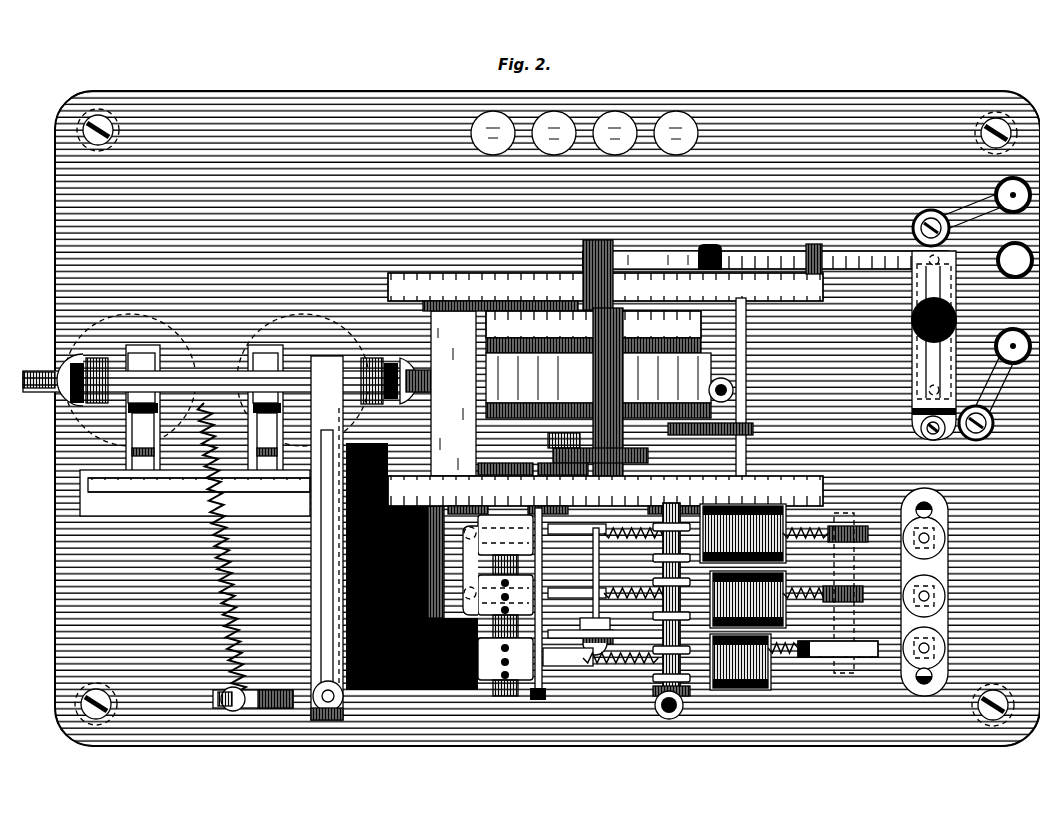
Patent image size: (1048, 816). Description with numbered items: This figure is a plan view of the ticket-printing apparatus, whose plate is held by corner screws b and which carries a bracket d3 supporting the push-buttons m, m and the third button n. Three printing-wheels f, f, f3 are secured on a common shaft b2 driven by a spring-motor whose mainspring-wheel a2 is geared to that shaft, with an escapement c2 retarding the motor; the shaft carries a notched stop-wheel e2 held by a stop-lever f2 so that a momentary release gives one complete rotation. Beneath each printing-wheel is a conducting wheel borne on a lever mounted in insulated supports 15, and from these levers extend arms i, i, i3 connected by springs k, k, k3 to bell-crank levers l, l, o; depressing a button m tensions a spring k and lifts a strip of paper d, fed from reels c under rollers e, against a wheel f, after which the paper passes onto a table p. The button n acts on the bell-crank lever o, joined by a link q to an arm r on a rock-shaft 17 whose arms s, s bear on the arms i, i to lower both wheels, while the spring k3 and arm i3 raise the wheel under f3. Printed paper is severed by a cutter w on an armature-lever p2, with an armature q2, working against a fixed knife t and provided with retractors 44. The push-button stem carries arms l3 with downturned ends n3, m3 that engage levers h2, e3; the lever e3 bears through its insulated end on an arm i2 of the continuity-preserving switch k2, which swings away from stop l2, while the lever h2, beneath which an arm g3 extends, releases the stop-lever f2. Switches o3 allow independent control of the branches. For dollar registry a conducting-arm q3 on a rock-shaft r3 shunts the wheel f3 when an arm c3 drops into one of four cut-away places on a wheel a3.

The fastening screws b is at (92, 106).
The armature-lever p2 is at (160, 340).
The armature q2 is at (195, 493).
The retractors 44 is at (214, 560).
The fixed knife t is at (313, 548).
The cutter w is at (313, 538).
The table p is at (386, 680).
The printing-wheel f3 is at (482, 686).
The common shaft b2 is at (512, 686).
The arms l3 is at (958, 286).
The switch k2 is at (588, 240).
The arm g3 is at (706, 240).
The arm i2 is at (643, 259).
The lever e3 is at (822, 244).
The downwardly-turned end m3 is at (930, 254).
The spring k3 is at (948, 316).
The lever h2 is at (765, 317).
The downwardly-turned end n3 is at (920, 380).
The switch o3 is at (985, 405).
The mainspring-wheel a2 is at (738, 340).
The stop-wheel e2 is at (448, 374).
The stop-lever f2 is at (448, 385).
The stop l2 is at (589, 444).
The wheel a3 is at (510, 461).
The arm c3 is at (563, 465).
The escapement c2 is at (605, 464).
The arms s is at (577, 571).
The arms i is at (709, 560).
The printing-wheels f is at (527, 540).
The rock-shaft r3 is at (576, 556).
The supports 15 is at (465, 575).
The springs k is at (636, 563).
The conducting-arm q3 is at (608, 624).
The arm r is at (602, 633).
The link q is at (639, 615).
The rock-shaft 17 is at (616, 559).
The arm i3 is at (555, 663).
The rollers e is at (628, 682).
The strip of paper d is at (743, 597).
The reels c is at (798, 581).
The bell-crank levers l is at (835, 600).
The bell-crank lever o is at (838, 640).
The push-buttons m is at (938, 533).
The bracket d3 is at (938, 592).
The button n is at (938, 640).